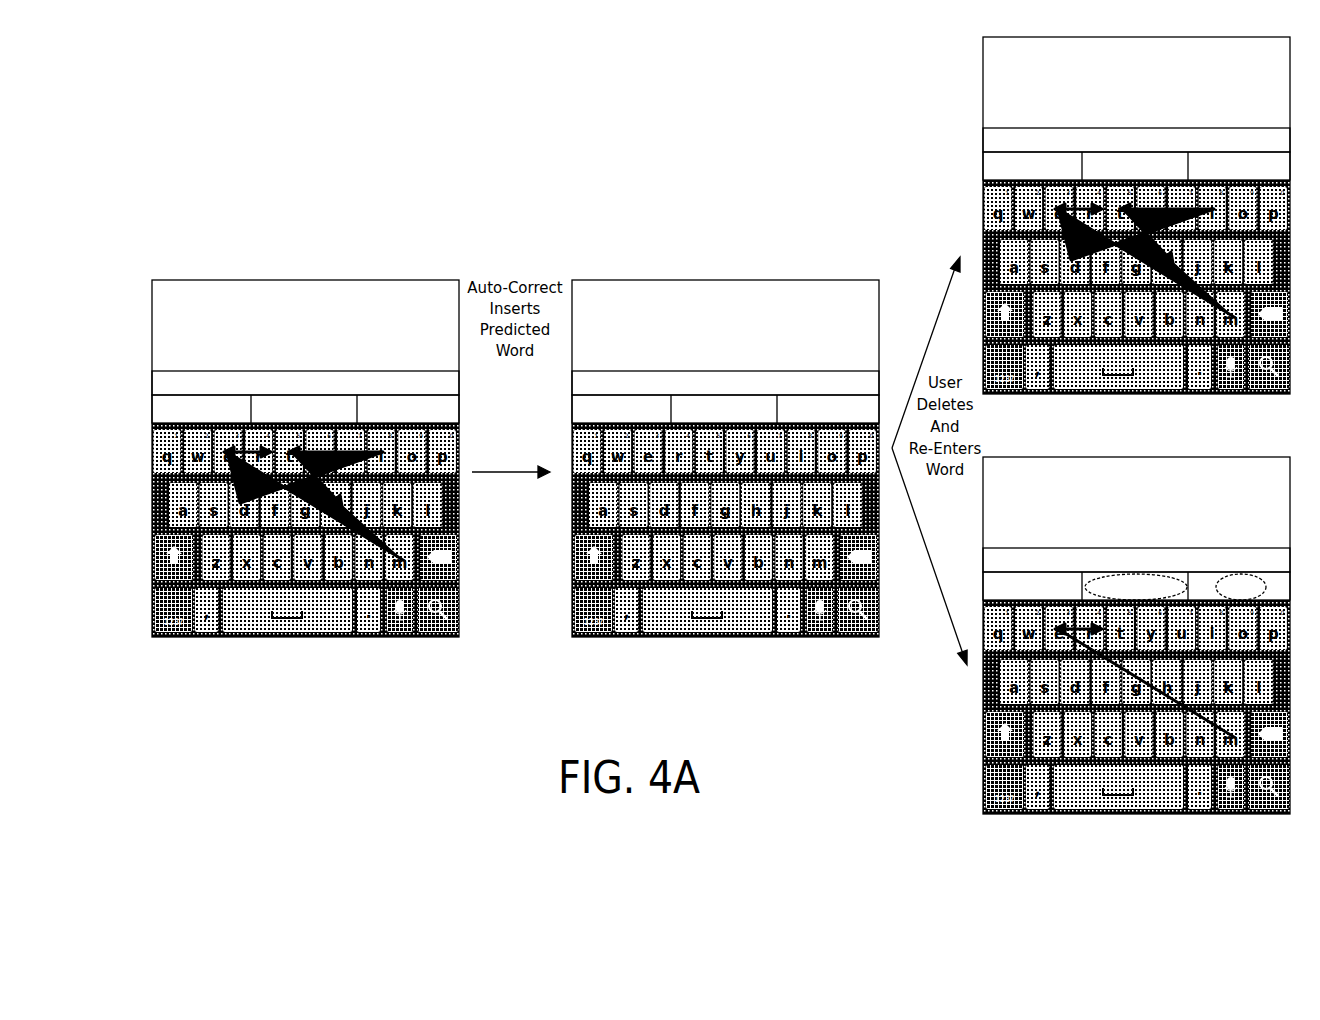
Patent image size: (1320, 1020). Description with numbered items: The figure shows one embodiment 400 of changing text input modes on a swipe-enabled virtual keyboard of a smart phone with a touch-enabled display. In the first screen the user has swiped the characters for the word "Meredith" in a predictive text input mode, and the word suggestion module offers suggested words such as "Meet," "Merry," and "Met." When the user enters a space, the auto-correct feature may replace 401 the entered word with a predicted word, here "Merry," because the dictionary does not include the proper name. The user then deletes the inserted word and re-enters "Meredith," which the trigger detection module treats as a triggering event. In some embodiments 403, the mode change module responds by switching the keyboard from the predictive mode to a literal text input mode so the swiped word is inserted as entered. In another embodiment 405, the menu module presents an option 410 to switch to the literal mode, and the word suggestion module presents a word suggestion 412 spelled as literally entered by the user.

The embodiment of changing text input modes 400 is at (207, 115).
The auto-correct replacement 401 is at (496, 458).
The mode change embodiment 403 is at (919, 346).
The option presenting embodiment 405 is at (924, 566).
The option to change the text input mode 410 is at (1141, 565).
The word suggestion spelled as literally entered 412 is at (1247, 565).